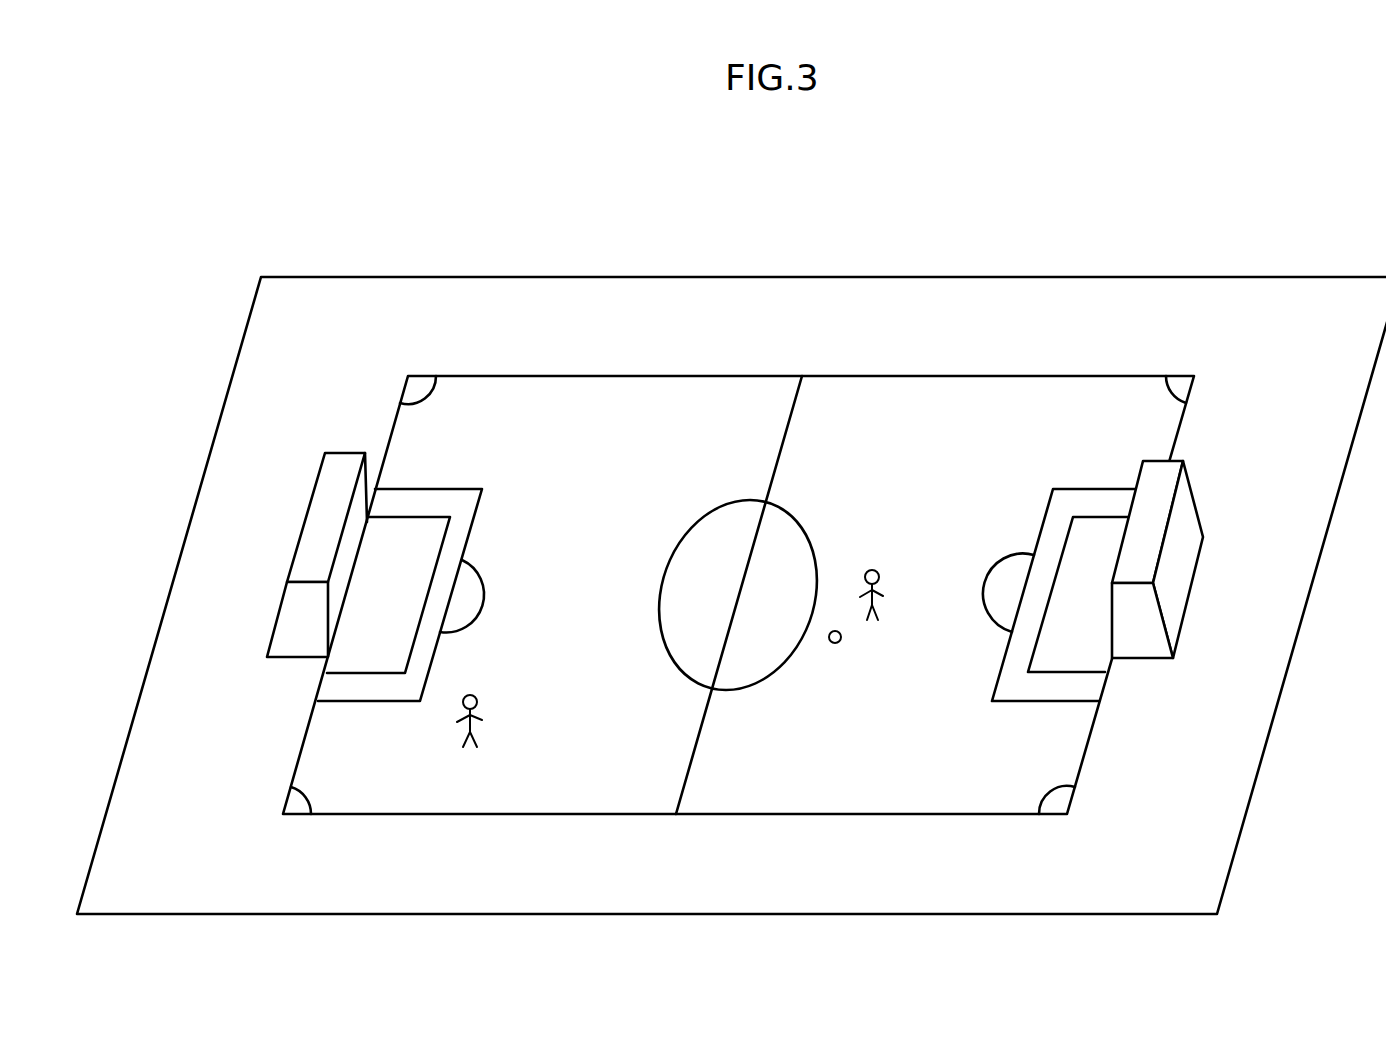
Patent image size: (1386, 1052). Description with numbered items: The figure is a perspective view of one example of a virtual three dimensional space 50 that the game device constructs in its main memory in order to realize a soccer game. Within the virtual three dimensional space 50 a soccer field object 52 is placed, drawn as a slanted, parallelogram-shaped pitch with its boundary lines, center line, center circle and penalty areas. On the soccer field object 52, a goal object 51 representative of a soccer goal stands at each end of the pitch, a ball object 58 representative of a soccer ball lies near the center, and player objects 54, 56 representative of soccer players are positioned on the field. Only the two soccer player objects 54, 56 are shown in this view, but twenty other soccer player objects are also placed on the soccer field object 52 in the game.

The virtual three dimensional space 50 is at (631, 235).
The goal object 51 is at (276, 620).
The soccer field object 52 is at (823, 340).
The player object 54 is at (874, 598).
The player object 56 is at (473, 725).
The ball object 58 is at (842, 638).